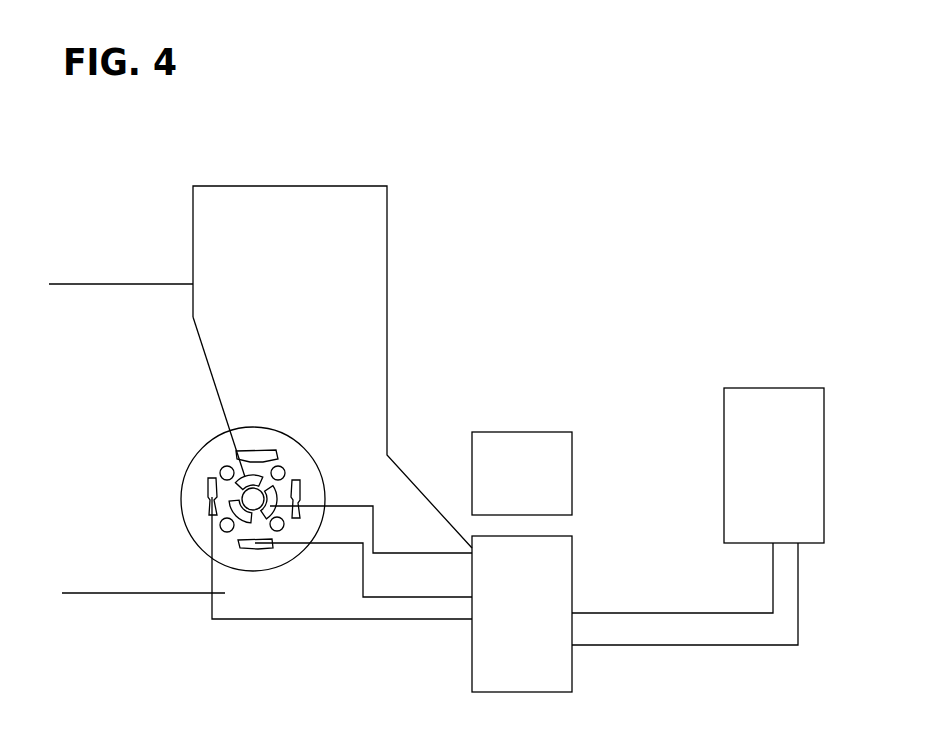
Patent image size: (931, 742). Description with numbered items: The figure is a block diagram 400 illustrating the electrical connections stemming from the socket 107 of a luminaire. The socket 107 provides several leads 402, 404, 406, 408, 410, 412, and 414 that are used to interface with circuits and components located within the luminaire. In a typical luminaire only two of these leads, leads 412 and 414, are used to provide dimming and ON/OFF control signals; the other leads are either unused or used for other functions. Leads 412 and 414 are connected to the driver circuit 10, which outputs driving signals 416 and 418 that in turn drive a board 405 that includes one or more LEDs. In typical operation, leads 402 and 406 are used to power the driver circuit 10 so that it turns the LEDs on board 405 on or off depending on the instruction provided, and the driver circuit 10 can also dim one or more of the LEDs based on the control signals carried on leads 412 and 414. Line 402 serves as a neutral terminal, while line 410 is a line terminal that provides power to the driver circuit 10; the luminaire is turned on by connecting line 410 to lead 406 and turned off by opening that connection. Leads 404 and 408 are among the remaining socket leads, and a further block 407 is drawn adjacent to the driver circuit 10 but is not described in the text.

The diagram 400 is at (108, 129).
The lead 402 is at (317, 367).
The lead 404 is at (253, 451).
The lead 406 is at (272, 486).
The lead 408 is at (297, 497).
The lead 410 is at (240, 512).
The lead 412 is at (371, 529).
The lead 414 is at (355, 578).
The driving signal 416 is at (672, 578).
The driving signal 418 is at (685, 609).
The driver circuit 10 is at (537, 624).
The sensor module 407 is at (541, 486).
The board 405 is at (792, 477).
The socket 107 is at (200, 451).